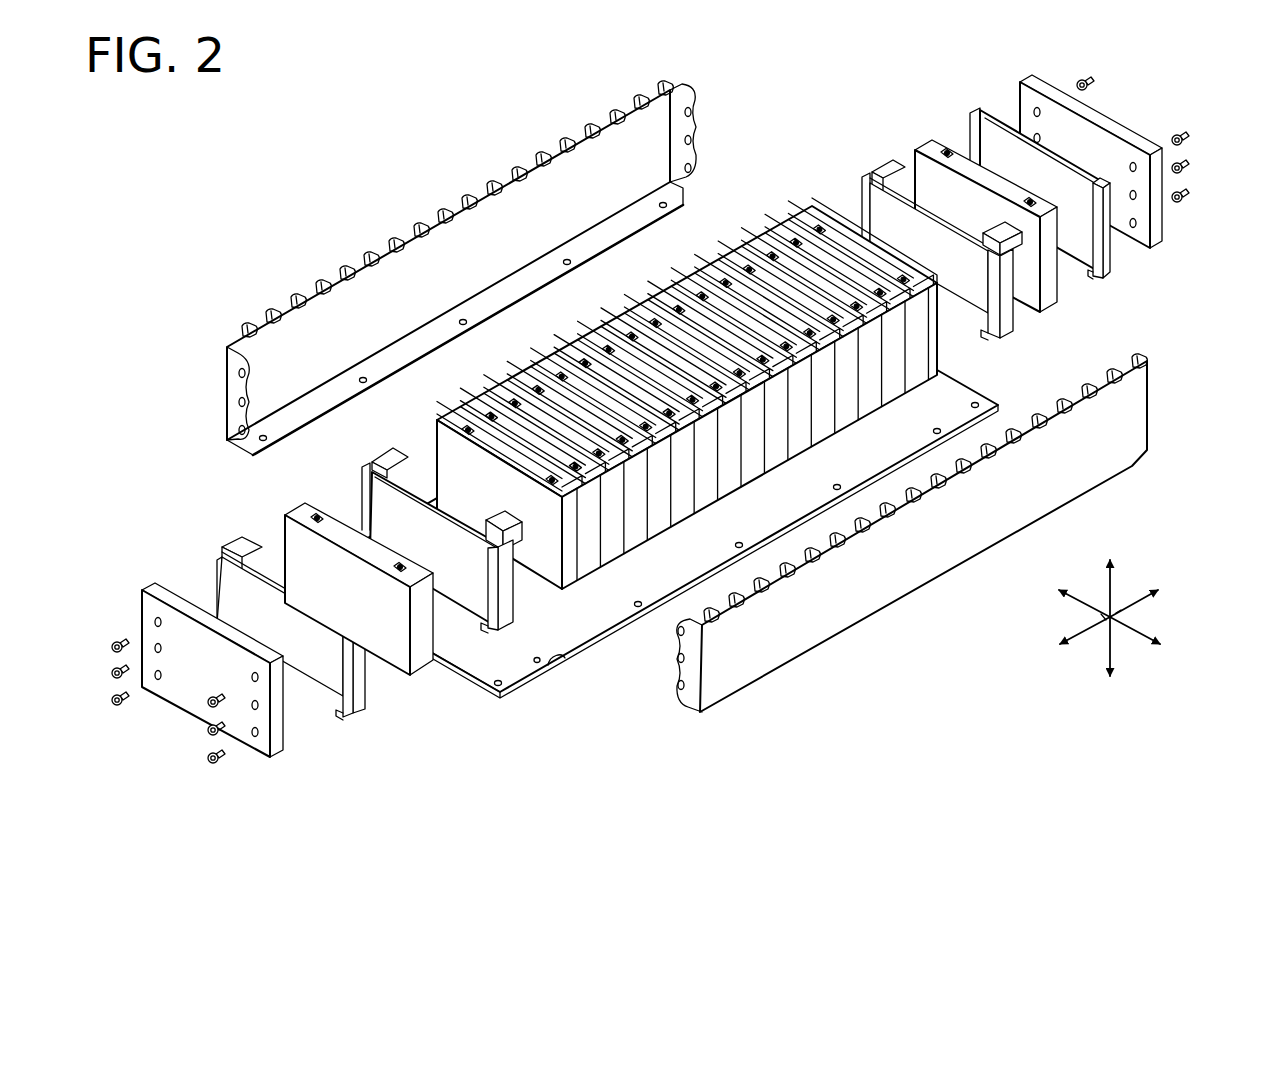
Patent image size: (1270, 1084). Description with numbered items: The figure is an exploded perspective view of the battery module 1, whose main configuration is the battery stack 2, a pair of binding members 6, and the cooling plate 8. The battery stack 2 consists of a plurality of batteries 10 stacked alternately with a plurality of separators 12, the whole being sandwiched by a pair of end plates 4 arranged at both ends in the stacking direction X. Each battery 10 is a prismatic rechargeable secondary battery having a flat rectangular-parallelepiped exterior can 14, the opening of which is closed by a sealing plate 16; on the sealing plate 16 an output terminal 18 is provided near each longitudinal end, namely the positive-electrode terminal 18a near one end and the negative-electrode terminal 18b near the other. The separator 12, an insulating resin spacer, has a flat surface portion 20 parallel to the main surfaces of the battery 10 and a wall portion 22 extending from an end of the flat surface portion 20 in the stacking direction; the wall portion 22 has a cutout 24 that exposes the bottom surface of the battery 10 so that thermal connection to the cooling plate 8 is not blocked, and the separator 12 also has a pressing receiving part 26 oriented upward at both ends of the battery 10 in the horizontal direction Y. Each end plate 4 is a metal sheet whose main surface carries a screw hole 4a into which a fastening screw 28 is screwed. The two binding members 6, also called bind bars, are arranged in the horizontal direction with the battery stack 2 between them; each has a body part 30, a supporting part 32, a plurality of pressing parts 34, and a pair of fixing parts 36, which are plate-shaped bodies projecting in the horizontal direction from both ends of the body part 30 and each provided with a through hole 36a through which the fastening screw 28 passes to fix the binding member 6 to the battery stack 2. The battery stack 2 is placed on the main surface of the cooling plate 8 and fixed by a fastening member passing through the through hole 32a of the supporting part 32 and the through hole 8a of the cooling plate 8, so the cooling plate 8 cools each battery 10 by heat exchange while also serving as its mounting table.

The battery module 1 is at (640, 862).
The battery stack 2 is at (800, 203).
The end plate 4 is at (1128, 177).
The screw hole 4a is at (1136, 226).
The binding member 6 is at (680, 441).
The cooling plate 8 is at (500, 700).
The through hole 8a is at (542, 665).
The battery 10 is at (1046, 203).
The separator 12 is at (1113, 255).
The exterior can 14 is at (1062, 288).
The sealing plate 16 is at (933, 146).
The output terminal 18 is at (1053, 131).
The positive-electrode terminal 18a is at (947, 148).
The negative-electrode terminal 18b is at (1032, 198).
The flat surface portion 20 is at (909, 248).
The wall portion 22 is at (860, 200).
The cutout 24 is at (984, 340).
The pressing receiving part 26 is at (890, 168).
The fastening screw 28 is at (1186, 142).
The body part 30 is at (632, 152).
The supporting part 32 is at (600, 253).
The through hole 32a is at (568, 266).
The pressing part 34 is at (447, 212).
The fixing part 36 is at (235, 441).
The through hole 36a is at (247, 446).